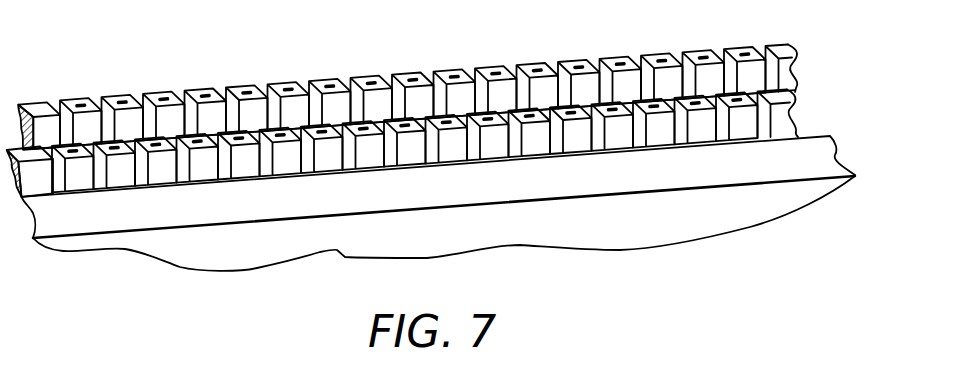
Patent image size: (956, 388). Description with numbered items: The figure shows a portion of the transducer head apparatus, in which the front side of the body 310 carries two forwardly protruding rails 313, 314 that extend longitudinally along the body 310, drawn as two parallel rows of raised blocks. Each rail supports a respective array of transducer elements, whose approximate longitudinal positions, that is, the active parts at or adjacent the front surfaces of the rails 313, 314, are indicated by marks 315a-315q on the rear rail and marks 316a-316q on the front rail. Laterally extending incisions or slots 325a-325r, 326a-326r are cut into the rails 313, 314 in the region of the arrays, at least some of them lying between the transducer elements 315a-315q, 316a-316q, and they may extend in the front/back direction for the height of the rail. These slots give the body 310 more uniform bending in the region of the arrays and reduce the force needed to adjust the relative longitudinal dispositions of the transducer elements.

The body 310 is at (747, 205).
The rail 313 is at (799, 91).
The rail 314 is at (786, 128).
The transducer elements 315a-315q is at (366, 68).
The transducer elements 316a-316q is at (287, 135).
The slots 325a-325r is at (172, 84).
The slots 326a-326r is at (522, 136).